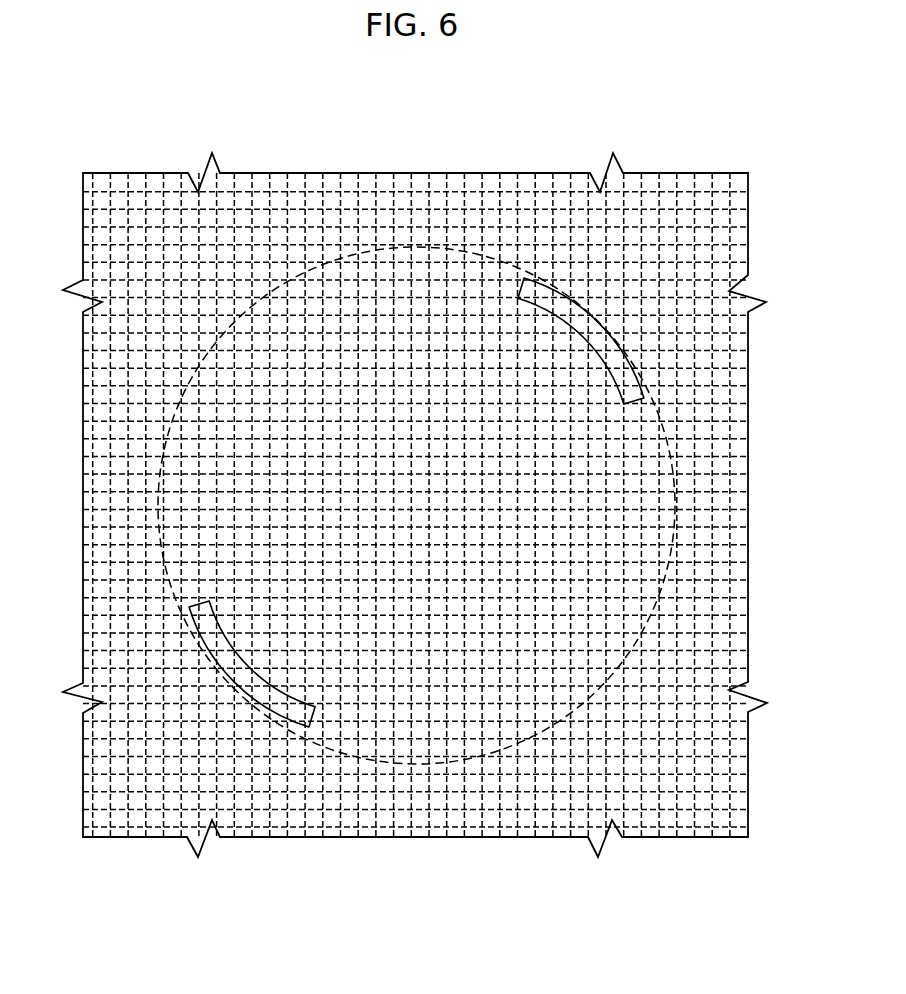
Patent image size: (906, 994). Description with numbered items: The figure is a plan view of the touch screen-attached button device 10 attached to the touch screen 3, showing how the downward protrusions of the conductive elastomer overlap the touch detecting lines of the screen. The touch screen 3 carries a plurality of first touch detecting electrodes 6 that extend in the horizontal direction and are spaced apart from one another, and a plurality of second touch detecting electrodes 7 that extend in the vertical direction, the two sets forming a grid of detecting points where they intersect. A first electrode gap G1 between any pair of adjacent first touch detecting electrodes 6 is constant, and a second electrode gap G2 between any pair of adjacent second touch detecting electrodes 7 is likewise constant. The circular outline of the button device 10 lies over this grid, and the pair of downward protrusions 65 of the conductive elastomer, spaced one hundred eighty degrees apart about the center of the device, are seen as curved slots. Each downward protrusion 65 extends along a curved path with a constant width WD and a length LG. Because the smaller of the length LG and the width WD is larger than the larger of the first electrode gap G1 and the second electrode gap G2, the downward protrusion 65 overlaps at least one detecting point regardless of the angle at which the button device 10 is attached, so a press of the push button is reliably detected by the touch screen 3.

The touch screen 3 is at (683, 840).
The first touch detecting electrodes 6 is at (83, 191).
The second touch detecting electrodes 7 is at (305, 172).
The touch screen-attached button device 10 is at (435, 763).
The downward protrusion 65 is at (597, 322).
The length LG is at (604, 452).
The width WD is at (282, 640).
The first electrode gap G1 is at (83, 438).
The second electrode gap G2 is at (708, 140).